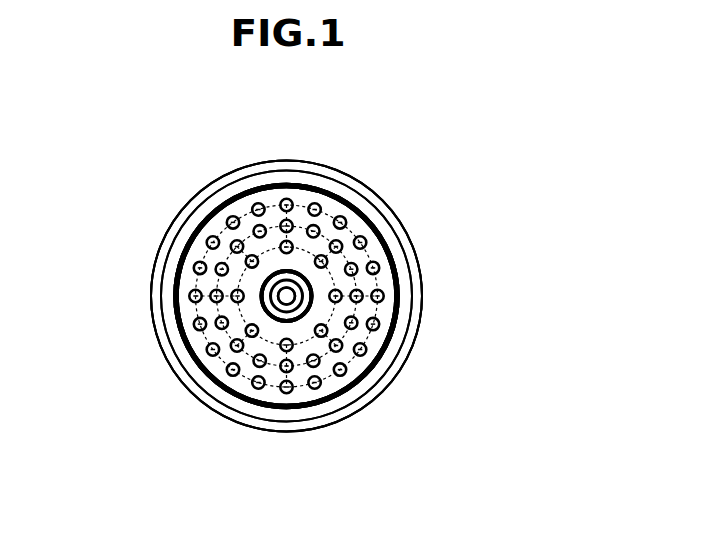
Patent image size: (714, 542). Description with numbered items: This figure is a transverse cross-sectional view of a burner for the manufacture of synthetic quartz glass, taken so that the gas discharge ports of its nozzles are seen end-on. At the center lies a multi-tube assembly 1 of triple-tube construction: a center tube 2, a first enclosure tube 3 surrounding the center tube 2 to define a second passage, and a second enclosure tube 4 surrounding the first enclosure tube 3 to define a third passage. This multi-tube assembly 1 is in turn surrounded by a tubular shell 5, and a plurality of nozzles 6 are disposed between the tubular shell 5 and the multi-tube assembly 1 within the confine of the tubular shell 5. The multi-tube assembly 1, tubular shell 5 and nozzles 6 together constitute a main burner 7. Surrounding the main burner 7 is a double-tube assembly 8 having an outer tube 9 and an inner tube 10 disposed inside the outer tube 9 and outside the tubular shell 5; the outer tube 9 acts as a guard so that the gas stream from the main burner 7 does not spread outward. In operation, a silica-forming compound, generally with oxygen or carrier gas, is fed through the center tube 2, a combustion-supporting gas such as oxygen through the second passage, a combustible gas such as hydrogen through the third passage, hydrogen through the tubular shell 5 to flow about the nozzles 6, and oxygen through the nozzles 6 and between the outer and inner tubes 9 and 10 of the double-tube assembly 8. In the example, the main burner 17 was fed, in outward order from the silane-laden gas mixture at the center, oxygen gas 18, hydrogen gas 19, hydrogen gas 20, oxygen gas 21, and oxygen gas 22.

The multi-tube assembly 1 is at (302, 270).
The center tube 2 is at (309, 281).
The first enclosure tube 3 is at (303, 290).
The second enclosure tube 4 is at (297, 304).
The tubular shell 5 is at (354, 385).
The nozzles 6 is at (291, 393).
The main burner 7 is at (285, 185).
The main burner 17 is at (286, 296).
The double-tube assembly 8 is at (211, 413).
The outer tube 9 is at (417, 339).
The inner tube 10 is at (398, 368).
The oxygen gas 18 is at (284, 306).
The hydrogen gas 19 is at (268, 274).
The hydrogen gas 20 is at (188, 282).
The oxygen gas 21 is at (185, 365).
The oxygen gas 22 is at (152, 316).